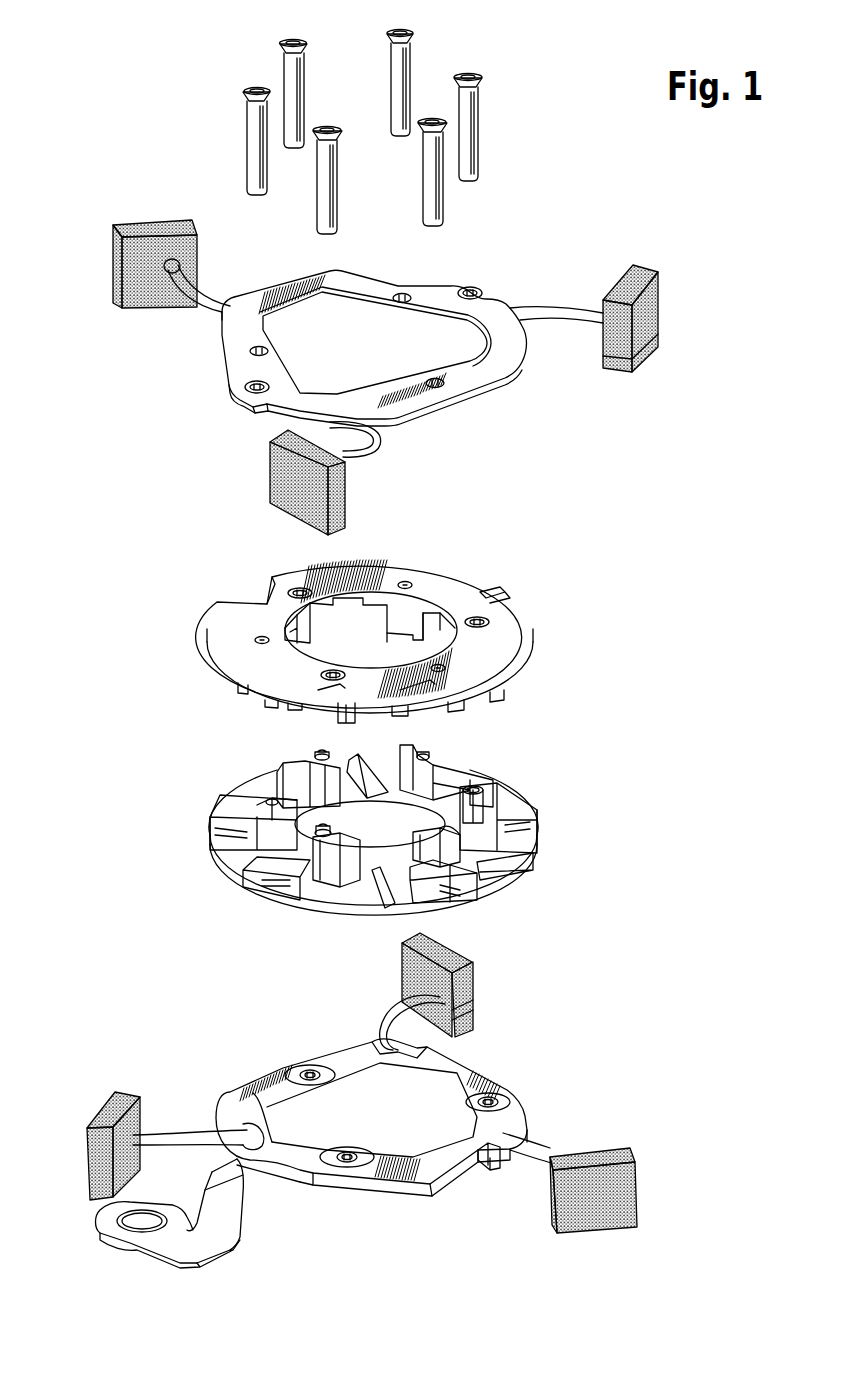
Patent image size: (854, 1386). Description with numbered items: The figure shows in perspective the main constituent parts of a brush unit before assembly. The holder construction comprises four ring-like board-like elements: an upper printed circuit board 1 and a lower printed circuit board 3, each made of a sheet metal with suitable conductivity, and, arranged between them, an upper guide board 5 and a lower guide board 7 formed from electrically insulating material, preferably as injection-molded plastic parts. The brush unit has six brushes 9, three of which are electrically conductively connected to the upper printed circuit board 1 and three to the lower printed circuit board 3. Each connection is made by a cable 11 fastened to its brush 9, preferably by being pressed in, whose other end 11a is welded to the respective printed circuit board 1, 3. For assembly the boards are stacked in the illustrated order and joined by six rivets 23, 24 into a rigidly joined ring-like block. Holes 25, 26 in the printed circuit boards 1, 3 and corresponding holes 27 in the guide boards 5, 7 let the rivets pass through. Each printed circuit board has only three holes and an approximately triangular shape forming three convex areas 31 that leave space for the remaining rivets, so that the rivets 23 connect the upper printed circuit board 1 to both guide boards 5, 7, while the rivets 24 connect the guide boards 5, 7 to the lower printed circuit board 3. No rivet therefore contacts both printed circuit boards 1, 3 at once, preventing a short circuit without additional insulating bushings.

The upper printed circuit board 1 is at (477, 371).
The lower printed circuit board 3 is at (288, 1078).
The upper guide board 5 is at (455, 587).
The lower guide board 7 is at (507, 807).
The brush 9 is at (137, 290).
The cable 11 is at (553, 311).
The other end of the cable 11a is at (490, 1165).
The rivet 23 is at (398, 90).
The rivet 24 is at (293, 70).
The hole 25 is at (403, 295).
The hole 26 is at (310, 1069).
The hole 27 is at (297, 592).
The convex area 31 is at (480, 348).